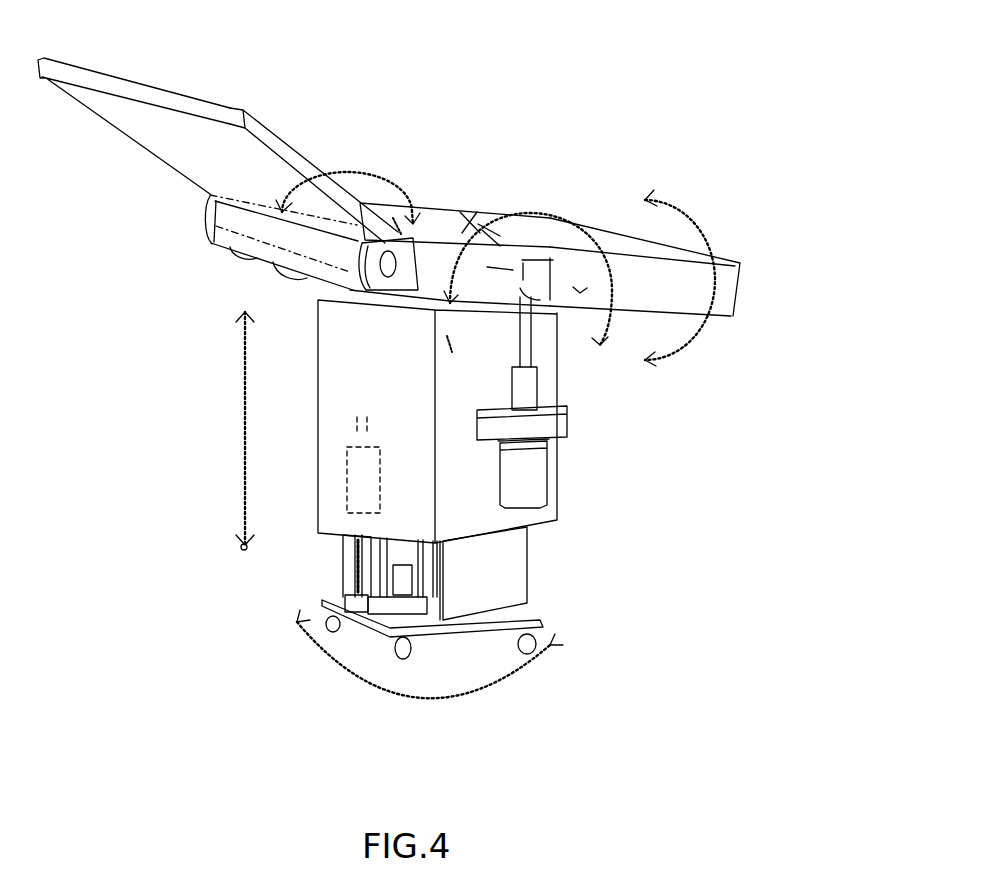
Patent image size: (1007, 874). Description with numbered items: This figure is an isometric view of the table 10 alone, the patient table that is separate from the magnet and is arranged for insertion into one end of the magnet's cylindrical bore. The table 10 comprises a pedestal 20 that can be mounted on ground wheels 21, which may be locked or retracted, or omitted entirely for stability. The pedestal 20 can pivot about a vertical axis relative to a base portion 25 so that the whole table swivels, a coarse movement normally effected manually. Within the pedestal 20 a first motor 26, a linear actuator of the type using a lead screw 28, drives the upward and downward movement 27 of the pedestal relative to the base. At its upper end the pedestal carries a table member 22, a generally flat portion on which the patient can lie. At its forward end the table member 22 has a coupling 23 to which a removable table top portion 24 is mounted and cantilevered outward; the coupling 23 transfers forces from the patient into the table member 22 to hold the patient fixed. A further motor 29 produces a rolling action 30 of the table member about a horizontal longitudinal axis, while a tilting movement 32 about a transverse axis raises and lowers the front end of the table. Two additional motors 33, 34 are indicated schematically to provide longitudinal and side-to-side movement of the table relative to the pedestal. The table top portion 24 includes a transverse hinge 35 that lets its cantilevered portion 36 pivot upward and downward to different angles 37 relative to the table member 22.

The table 10 is at (630, 503).
The pedestal 20 is at (557, 520).
The ground wheels 21 is at (553, 646).
The table member 22 is at (740, 263).
The coupling 23 is at (420, 287).
The table top portion 24 is at (291, 100).
The base portion 25 is at (325, 598).
The first motor 26 is at (357, 497).
The upward and downward movement 27 is at (240, 453).
The lead screw 28 is at (388, 543).
The further motor 29 is at (540, 460).
The rolling action 30 is at (697, 223).
The tilting movement 32 is at (522, 298).
The additional motor 33 is at (577, 300).
The additional motor 34 is at (478, 212).
The transverse hinge 35 is at (206, 226).
The cantilevered portion 36 is at (168, 98).
The angles 37 is at (387, 170).